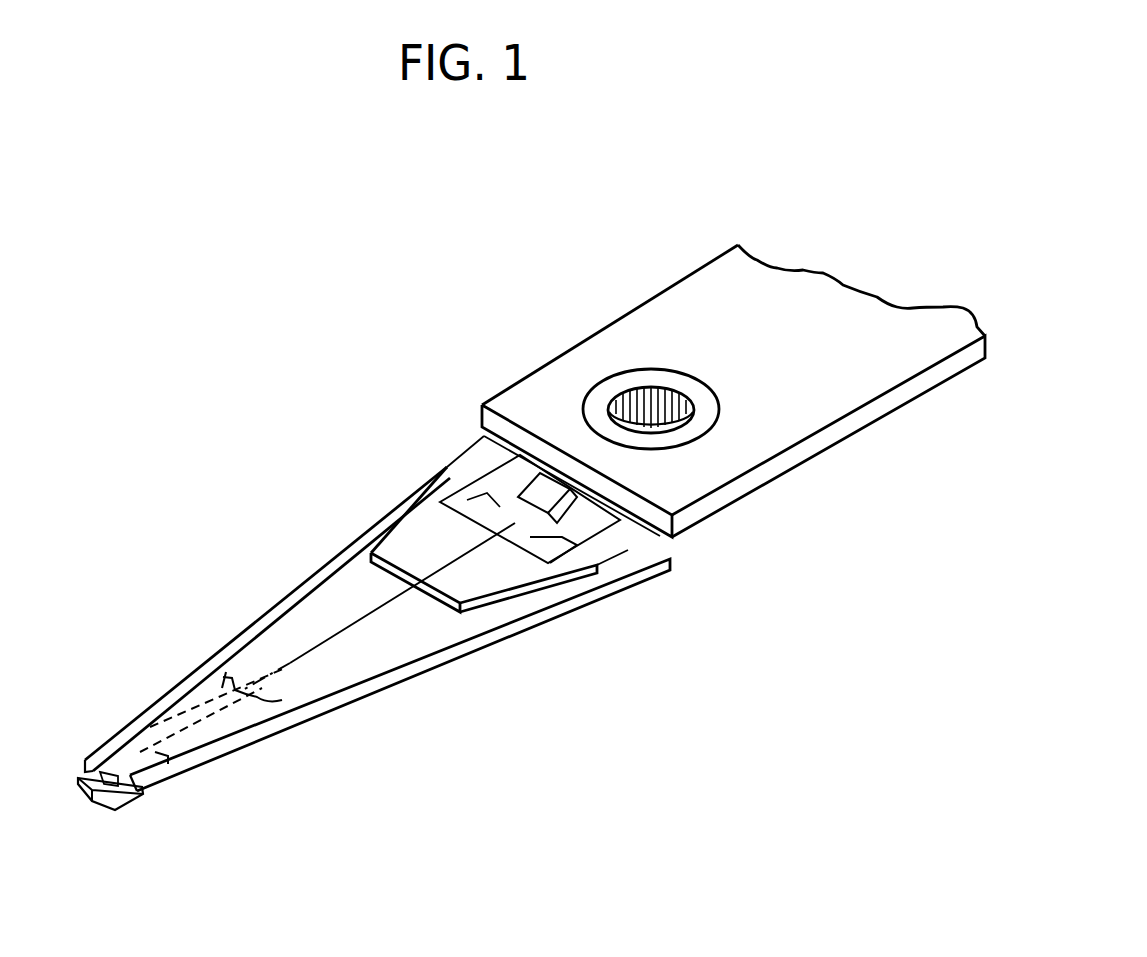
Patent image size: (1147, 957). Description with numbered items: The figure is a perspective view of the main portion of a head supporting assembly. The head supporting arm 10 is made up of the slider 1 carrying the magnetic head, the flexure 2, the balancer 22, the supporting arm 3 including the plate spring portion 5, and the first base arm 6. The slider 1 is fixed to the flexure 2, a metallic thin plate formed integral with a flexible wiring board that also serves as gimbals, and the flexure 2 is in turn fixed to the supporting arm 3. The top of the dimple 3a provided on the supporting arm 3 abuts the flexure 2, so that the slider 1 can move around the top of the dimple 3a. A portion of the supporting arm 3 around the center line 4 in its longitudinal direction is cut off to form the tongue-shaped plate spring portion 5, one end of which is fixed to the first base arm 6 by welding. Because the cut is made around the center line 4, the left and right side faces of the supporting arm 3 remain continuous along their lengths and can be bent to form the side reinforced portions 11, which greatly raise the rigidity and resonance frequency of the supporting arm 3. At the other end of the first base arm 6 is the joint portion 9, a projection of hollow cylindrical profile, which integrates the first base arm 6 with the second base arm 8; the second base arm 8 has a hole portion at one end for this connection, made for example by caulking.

The slider 1 is at (108, 778).
The flexure 2 is at (87, 767).
The supporting arm 3 is at (305, 617).
The dimple 3a is at (115, 772).
The center line 4 is at (292, 662).
The plate spring portion 5 is at (490, 462).
The first base arm 6 is at (497, 523).
The second base arm 8 is at (673, 320).
The joint portion 9 is at (607, 393).
The head supporting arm 10 is at (110, 310).
The side reinforced portions 11 is at (390, 675).
The balancer 22 is at (537, 487).